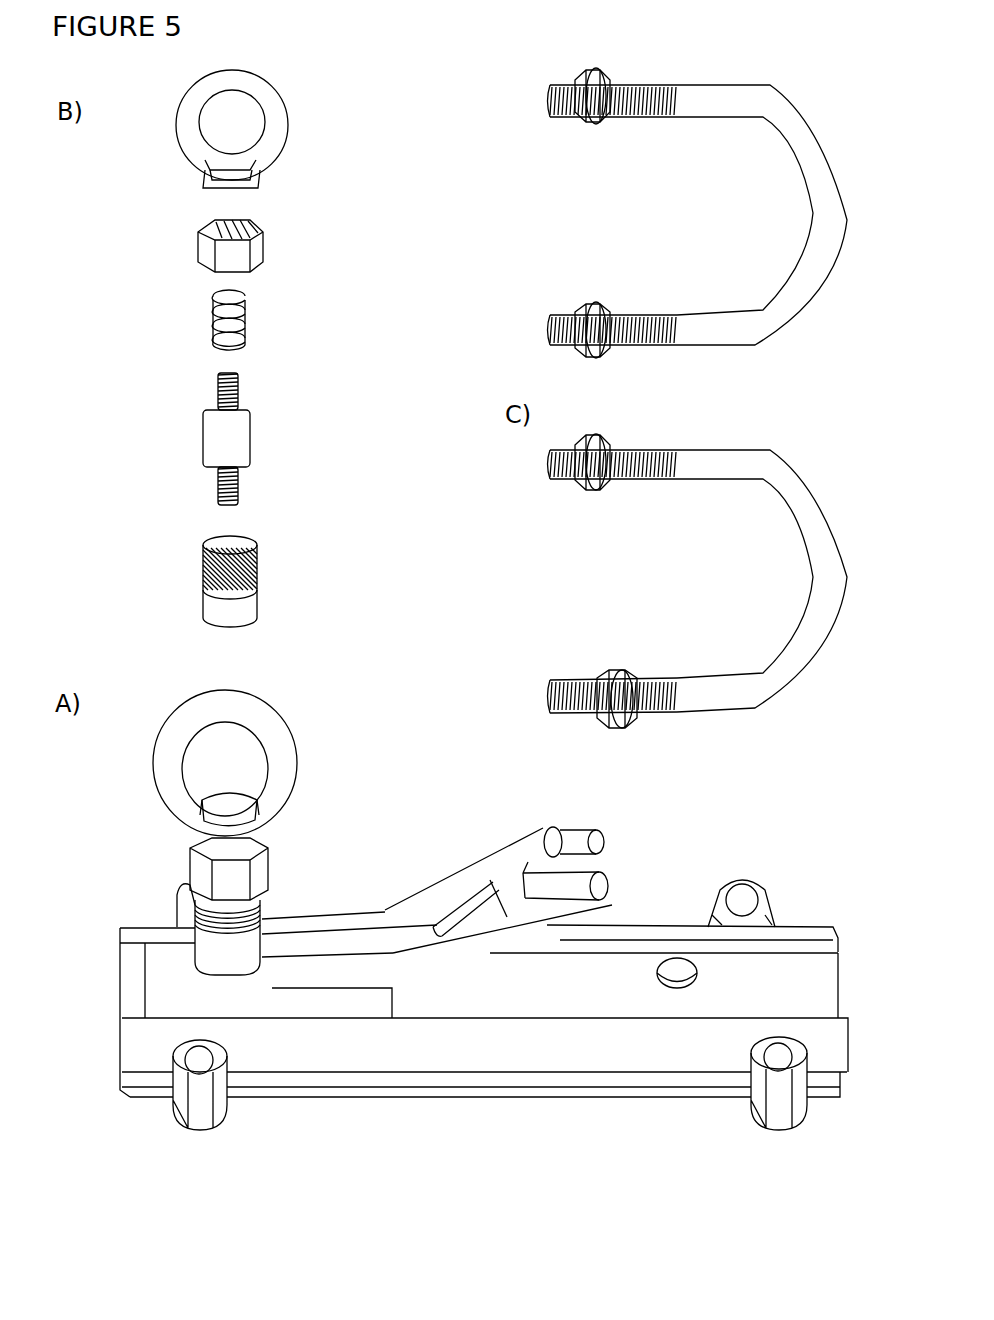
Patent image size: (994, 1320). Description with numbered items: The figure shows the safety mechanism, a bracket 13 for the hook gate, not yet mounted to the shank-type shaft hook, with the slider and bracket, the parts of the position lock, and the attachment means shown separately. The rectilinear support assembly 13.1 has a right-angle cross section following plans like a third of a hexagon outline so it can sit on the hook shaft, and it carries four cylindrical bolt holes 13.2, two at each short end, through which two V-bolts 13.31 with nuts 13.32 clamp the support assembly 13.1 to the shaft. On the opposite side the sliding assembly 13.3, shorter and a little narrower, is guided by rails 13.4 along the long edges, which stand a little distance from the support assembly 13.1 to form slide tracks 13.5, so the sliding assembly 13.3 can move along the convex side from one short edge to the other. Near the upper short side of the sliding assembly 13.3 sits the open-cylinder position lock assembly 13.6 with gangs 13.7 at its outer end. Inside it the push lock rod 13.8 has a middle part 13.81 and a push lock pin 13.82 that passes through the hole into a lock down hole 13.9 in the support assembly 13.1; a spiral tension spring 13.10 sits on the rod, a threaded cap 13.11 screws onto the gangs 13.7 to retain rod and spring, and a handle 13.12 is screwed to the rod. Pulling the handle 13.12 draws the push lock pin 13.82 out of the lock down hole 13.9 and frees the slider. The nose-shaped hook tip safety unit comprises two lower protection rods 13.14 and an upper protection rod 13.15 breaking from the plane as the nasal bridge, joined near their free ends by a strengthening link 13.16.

The bracket 13 is at (439, 977).
The rectilinear support assembly 13.1 is at (132, 975).
The cylindrical bolt holes 13.2 is at (182, 903).
The sliding assembly 13.3 is at (360, 1007).
The rails 13.4 is at (578, 1049).
The slide tracks 13.5 is at (127, 947).
The position lock assembly 13.6 is at (259, 599).
The gangs 13.7 is at (259, 559).
The push lock rod 13.8 is at (226, 432).
The middle part 13.81 is at (236, 438).
The push lock pin 13.82 is at (240, 387).
The lock down holes 13.9 is at (668, 971).
The spiral tension spring 13.10 is at (247, 316).
The threaded cap 13.11 is at (254, 238).
The handle 13.12 is at (272, 100).
The lower protection rods 13.14 is at (582, 888).
The upper protection rod 13.15 is at (442, 902).
The strengthening link 13.16 is at (510, 890).
The V-bolts 13.31 is at (748, 307).
The nuts 13.32 is at (580, 322).